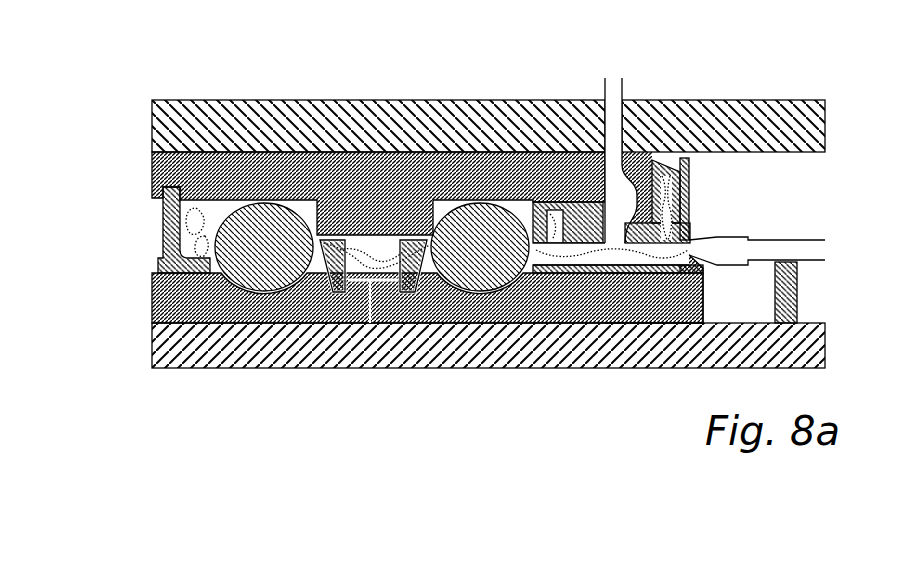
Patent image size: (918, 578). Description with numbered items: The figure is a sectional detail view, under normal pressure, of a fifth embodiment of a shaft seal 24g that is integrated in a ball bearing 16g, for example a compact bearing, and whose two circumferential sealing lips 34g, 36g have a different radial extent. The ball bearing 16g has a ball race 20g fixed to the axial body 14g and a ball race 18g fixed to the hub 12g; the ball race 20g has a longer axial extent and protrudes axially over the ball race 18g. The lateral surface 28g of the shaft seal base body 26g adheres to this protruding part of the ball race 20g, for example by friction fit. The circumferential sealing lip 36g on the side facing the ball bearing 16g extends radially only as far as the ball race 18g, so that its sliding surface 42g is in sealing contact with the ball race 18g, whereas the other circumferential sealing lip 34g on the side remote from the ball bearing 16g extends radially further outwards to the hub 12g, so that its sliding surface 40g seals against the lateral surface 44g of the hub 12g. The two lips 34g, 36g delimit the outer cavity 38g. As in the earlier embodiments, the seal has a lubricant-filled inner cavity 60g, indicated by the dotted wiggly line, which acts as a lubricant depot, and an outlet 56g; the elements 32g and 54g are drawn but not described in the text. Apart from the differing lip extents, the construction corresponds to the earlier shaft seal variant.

The hub 12g is at (262, 125).
The axial body 14g is at (296, 362).
The ball bearing 16g is at (148, 238).
The ball race 18g is at (152, 165).
The ball race 20g is at (155, 300).
The shaft seal 24g is at (706, 198).
The shaft seal base body 26g is at (692, 227).
The lateral surface 28g is at (628, 283).
The seat insert 32g is at (596, 216).
The circumferential sealing lip 34g is at (686, 175).
The circumferential sealing lip 36g is at (505, 205).
The outer cavity 38g is at (620, 200).
The sliding surface 40g is at (660, 144).
The sliding surface 42g is at (562, 186).
The lateral surface 44g is at (812, 156).
The support 54g is at (696, 258).
The outlet 56g is at (612, 120).
The inner cavity 60g is at (571, 270).